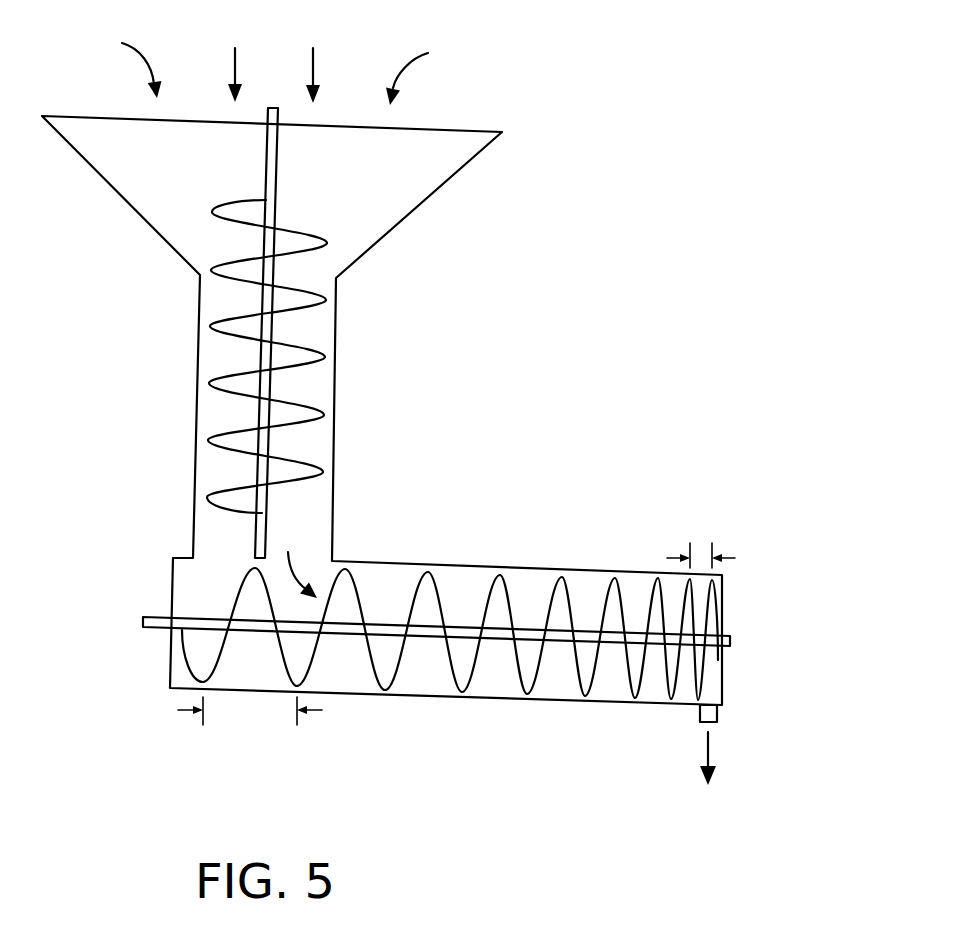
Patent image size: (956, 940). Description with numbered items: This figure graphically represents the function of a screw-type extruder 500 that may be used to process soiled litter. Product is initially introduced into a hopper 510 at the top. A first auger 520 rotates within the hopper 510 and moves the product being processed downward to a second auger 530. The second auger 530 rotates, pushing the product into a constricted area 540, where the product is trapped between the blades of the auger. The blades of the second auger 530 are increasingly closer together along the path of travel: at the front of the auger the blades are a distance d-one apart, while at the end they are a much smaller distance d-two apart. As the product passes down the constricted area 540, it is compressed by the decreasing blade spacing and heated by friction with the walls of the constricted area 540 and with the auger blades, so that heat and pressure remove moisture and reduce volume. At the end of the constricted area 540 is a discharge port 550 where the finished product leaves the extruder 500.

The screw-type extruder 500 is at (786, 106).
The hopper 510 is at (443, 187).
The first auger 520 is at (278, 162).
The second auger 530 is at (153, 613).
The constricted area 540 is at (387, 562).
The discharge port 550 is at (717, 718).